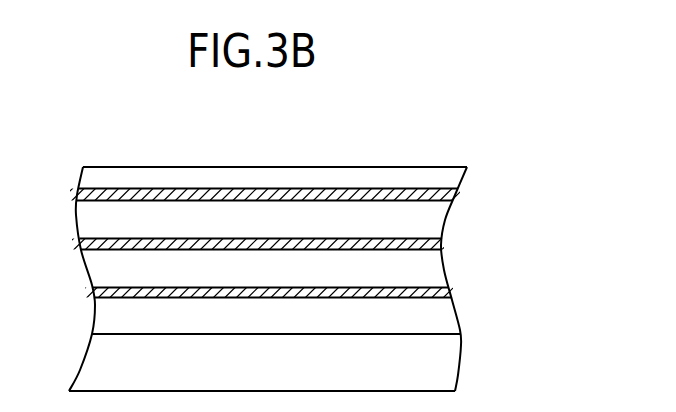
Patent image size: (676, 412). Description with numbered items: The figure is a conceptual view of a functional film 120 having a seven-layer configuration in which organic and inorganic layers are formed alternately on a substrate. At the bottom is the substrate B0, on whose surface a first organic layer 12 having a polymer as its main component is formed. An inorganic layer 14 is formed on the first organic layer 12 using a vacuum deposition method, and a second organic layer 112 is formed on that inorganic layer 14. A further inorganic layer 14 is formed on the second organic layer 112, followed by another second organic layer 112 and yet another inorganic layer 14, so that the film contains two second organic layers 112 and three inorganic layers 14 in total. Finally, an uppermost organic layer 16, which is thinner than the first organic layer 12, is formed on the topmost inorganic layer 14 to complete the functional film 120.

The functional film 120 is at (357, 141).
The uppermost organic layer 16 is at (433, 177).
The inorganic layer 14 is at (450, 197).
The second organic layer 112 is at (433, 216).
The first organic layer 12 is at (433, 325).
The substrate B0 is at (447, 363).